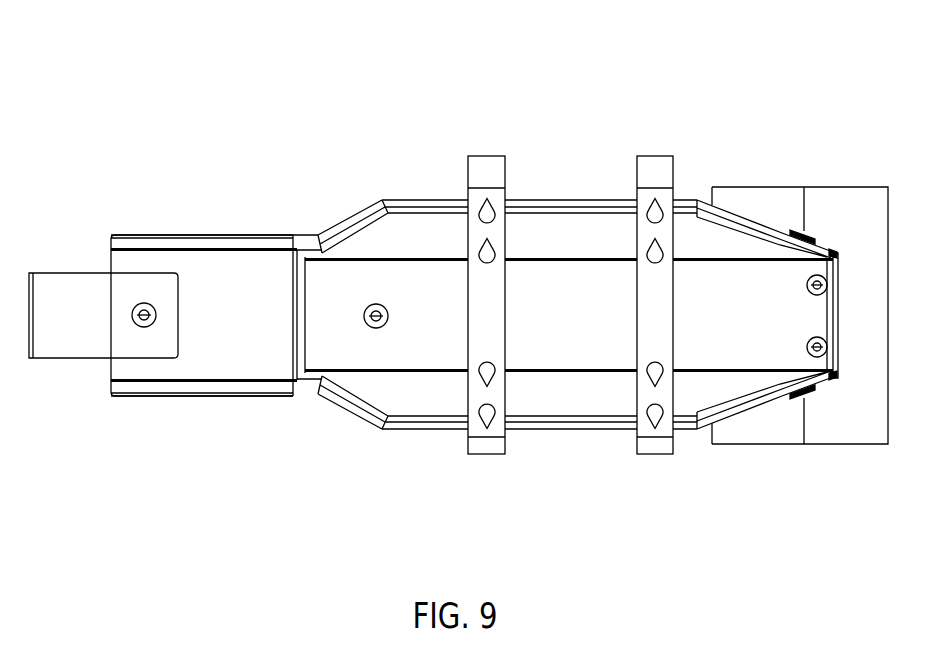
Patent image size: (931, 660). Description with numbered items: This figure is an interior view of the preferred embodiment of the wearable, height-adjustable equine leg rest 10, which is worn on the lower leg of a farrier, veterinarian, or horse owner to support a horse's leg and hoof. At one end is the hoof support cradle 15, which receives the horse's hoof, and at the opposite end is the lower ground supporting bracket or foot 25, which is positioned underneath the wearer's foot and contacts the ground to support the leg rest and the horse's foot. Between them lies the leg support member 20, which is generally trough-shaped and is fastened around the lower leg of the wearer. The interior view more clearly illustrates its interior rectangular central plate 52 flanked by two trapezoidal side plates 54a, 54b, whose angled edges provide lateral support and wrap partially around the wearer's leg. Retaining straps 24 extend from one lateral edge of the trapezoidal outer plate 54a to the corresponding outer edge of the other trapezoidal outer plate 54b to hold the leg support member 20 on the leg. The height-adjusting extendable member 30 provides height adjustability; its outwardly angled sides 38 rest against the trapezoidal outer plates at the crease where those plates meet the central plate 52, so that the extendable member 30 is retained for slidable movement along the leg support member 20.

The equine leg rest 10 is at (228, 91).
The hoof support cradle 15 is at (863, 423).
The leg support member 20 is at (571, 283).
The retaining straps 24 is at (493, 448).
The ground supporting bracket or foot 25 is at (70, 352).
The height-adjusting extendable member 30 is at (216, 309).
The outwardly angled sides 38 is at (177, 243).
The rectangular central plate 52 is at (419, 333).
The trapezoidal side plate 54a is at (413, 250).
The trapezoidal side plate 54b is at (410, 408).